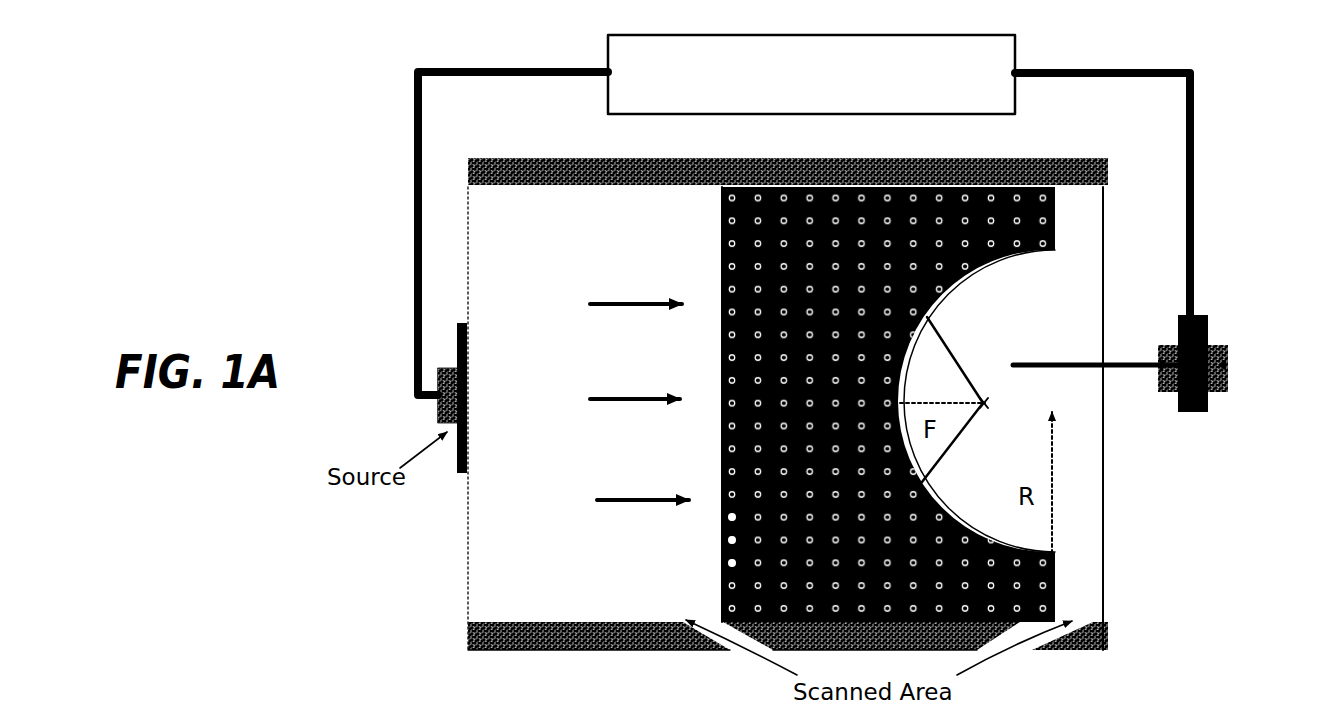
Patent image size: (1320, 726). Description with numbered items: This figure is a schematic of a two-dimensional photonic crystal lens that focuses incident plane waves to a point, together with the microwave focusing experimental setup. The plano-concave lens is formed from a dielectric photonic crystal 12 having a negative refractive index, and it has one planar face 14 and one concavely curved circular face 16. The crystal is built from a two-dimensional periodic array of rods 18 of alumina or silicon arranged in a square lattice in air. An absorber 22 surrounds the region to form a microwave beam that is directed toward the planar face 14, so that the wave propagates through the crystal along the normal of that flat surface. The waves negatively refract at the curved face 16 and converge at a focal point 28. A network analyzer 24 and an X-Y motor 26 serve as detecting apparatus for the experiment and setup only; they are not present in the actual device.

The dielectric photonic crystal 12 is at (830, 184).
The planar face 14 is at (724, 268).
The concavely curved circular face 16 is at (980, 270).
The rods 18 is at (725, 563).
The absorber 22 is at (492, 168).
The network analyzer 24 is at (1015, 43).
The X-Y motor 26 is at (1166, 400).
The focal point 28 is at (990, 398).